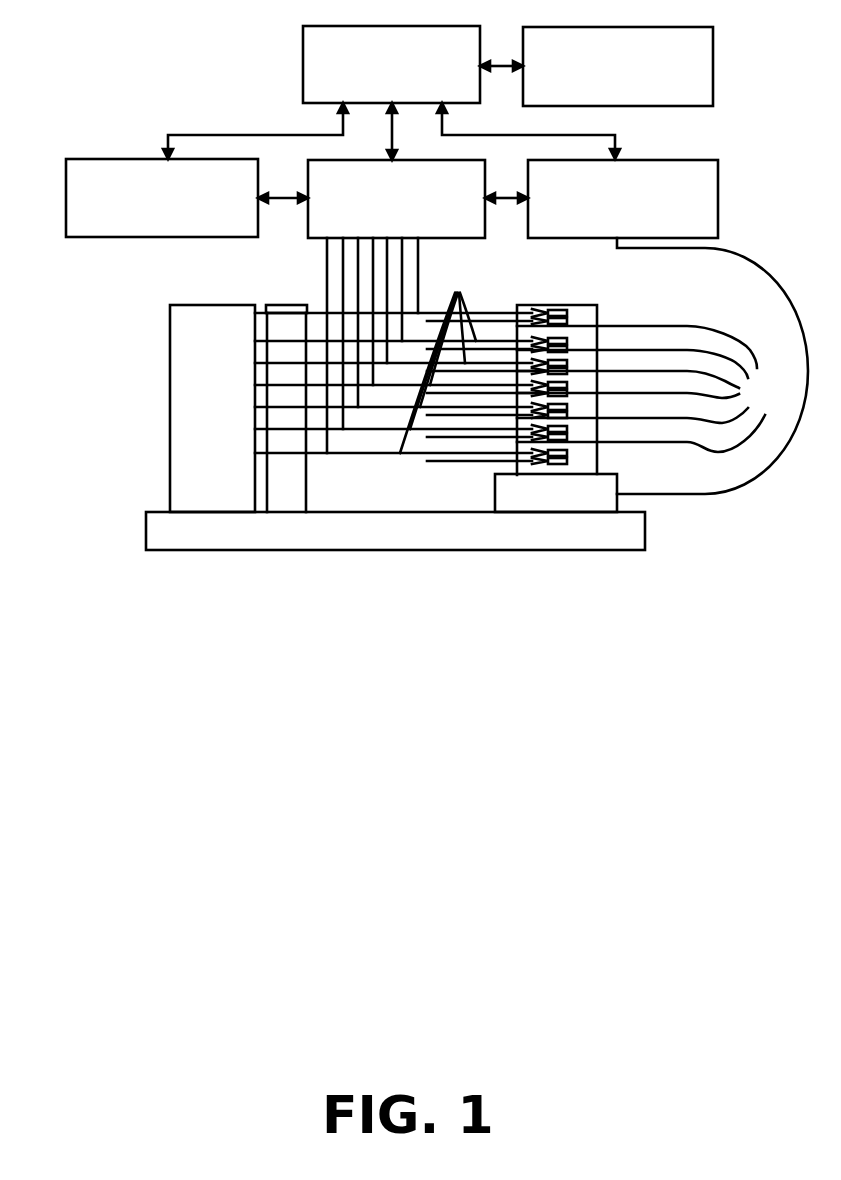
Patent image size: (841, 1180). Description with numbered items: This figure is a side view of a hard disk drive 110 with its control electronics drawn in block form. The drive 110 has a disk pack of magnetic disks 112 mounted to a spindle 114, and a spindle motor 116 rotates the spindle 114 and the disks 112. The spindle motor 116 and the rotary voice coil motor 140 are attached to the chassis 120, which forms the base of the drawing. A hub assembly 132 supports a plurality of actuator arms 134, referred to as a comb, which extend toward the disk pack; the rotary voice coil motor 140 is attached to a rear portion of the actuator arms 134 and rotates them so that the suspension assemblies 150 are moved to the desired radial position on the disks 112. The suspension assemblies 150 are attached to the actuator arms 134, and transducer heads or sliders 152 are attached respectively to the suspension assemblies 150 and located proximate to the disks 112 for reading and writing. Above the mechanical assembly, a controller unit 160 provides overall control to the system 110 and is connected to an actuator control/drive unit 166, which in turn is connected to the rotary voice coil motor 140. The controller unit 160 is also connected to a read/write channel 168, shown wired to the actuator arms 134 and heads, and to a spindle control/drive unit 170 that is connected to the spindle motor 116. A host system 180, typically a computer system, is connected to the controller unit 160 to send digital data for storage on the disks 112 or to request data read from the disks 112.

The hard disk drive 110 is at (92, 368).
The magnetic disk 112 is at (652, 389).
The spindle 114 is at (598, 314).
The spindle motor 116 is at (556, 493).
The chassis 120 is at (395, 531).
The hub assembly 132 is at (291, 305).
The actuator arms 134 is at (438, 363).
The rotary voice coil motor 140 is at (212, 408).
The suspension assemblies 150 is at (550, 328).
The transducer heads or sliders 152 is at (568, 325).
The controller unit 160 is at (391, 64).
The actuator control/drive unit 166 is at (162, 198).
The read/write channel 168 is at (396, 199).
The spindle control/drive unit 170 is at (623, 199).
The host system 180 is at (618, 66).